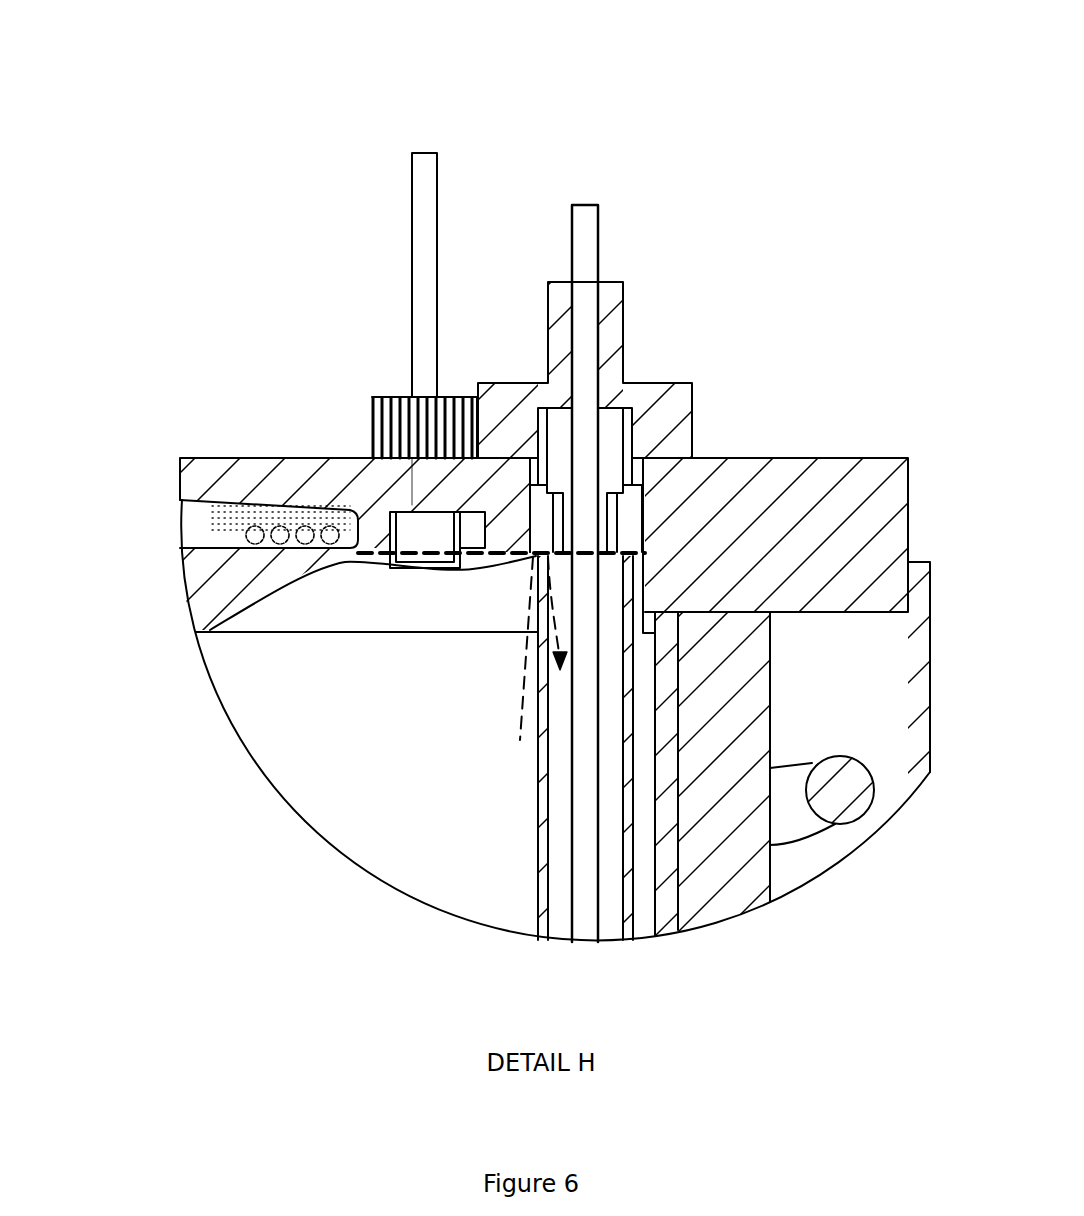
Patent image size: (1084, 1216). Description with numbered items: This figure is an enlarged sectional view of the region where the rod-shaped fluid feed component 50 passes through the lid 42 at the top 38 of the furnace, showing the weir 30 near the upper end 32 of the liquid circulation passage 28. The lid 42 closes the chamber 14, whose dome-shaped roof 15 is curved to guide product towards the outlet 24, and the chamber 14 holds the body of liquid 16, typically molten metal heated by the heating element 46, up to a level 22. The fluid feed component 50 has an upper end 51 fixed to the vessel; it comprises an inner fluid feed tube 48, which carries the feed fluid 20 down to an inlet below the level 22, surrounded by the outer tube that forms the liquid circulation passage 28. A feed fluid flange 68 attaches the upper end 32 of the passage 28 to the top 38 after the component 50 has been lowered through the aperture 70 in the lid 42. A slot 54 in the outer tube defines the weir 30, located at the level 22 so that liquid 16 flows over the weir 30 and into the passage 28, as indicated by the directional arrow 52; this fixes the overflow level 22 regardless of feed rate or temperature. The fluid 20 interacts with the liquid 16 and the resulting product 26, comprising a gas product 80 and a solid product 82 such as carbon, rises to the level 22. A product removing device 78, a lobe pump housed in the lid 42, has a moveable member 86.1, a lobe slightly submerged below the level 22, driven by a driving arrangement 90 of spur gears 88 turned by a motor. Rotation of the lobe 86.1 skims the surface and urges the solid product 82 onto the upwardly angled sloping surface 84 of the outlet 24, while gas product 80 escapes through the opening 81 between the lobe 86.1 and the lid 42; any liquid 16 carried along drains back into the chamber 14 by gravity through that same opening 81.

The chamber 14 is at (286, 728).
The roof 15 is at (243, 605).
The body of liquid 16 is at (397, 616).
The fluid 20 is at (585, 213).
The level 22 is at (500, 568).
The outlet 24 is at (182, 498).
The product 26 is at (207, 525).
The liquid circulation passage 28 is at (539, 882).
The weir 30 is at (545, 516).
The upper end 32 is at (542, 608).
The top 38 is at (836, 458).
The lid 42 is at (890, 530).
The heating element 46 is at (850, 800).
The fluid feed tube 48 is at (600, 242).
The fluid feed component 50 is at (660, 87).
The upper end 51 is at (776, 327).
The directional arrow 52 is at (522, 682).
The slot 54 is at (556, 522).
The feed fluid flange 68 is at (693, 383).
The aperture 70 is at (645, 500).
The product removing device 78 is at (392, 583).
The fluid product 80 is at (250, 514).
The opening 81 is at (424, 534).
The solid product 82 is at (326, 544).
The sloping surface 84 is at (240, 550).
The moveable member 86.1 is at (373, 530).
The gears 88 is at (412, 398).
The driving arrangement 90 is at (276, 178).